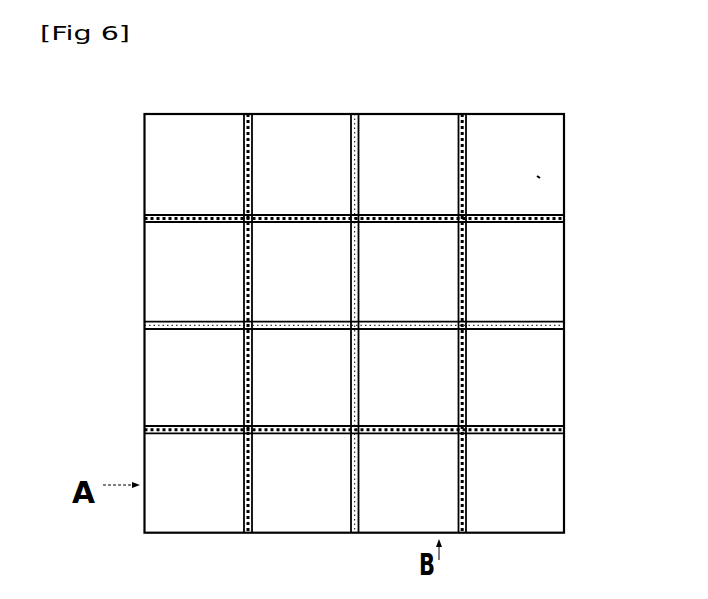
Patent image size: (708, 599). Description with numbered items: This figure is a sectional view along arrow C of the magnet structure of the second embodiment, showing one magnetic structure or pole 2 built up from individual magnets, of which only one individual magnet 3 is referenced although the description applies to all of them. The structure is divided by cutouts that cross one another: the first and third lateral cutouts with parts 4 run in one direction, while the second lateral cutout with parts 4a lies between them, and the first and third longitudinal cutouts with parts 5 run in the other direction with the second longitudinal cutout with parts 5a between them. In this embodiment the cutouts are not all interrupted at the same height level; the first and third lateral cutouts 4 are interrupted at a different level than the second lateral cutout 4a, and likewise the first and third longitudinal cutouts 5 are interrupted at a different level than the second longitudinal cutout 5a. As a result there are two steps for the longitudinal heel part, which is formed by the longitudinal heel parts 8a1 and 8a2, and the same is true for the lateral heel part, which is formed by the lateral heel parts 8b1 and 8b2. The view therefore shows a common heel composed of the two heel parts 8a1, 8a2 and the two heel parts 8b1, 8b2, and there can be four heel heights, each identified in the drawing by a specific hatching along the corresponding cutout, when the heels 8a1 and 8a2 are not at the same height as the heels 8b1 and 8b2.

The magnet structure 2 is at (574, 193).
The individual magnet 3 is at (538, 176).
The first and third lateral cutouts 4 is at (244, 490).
The second lateral cutout 4a is at (351, 484).
The first and third longitudinal cutouts 5 is at (200, 211).
The second longitudinal cutout 5a is at (200, 319).
The longitudinal heel part 8a1 is at (146, 218).
The longitudinal heel part 8a2 is at (146, 325).
The lateral heel part 8b1 is at (252, 158).
The lateral heel part 8b2 is at (358, 157).